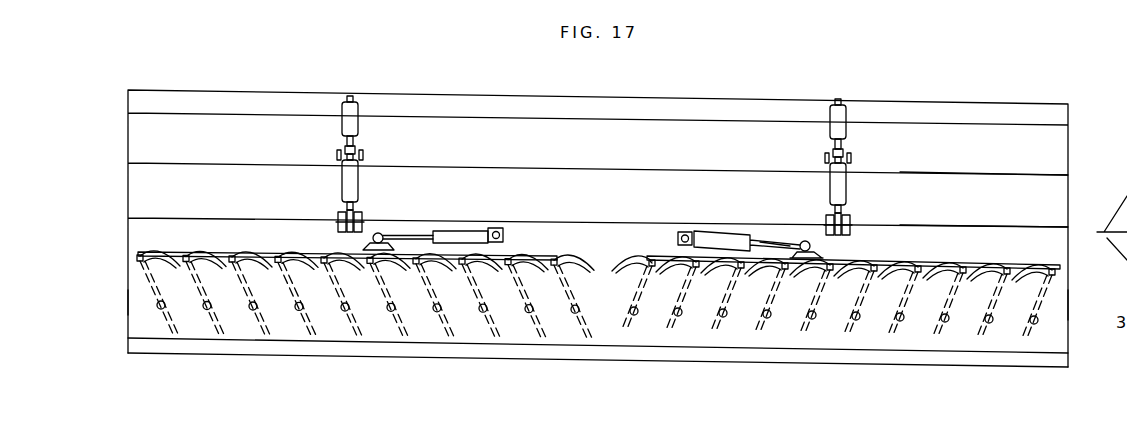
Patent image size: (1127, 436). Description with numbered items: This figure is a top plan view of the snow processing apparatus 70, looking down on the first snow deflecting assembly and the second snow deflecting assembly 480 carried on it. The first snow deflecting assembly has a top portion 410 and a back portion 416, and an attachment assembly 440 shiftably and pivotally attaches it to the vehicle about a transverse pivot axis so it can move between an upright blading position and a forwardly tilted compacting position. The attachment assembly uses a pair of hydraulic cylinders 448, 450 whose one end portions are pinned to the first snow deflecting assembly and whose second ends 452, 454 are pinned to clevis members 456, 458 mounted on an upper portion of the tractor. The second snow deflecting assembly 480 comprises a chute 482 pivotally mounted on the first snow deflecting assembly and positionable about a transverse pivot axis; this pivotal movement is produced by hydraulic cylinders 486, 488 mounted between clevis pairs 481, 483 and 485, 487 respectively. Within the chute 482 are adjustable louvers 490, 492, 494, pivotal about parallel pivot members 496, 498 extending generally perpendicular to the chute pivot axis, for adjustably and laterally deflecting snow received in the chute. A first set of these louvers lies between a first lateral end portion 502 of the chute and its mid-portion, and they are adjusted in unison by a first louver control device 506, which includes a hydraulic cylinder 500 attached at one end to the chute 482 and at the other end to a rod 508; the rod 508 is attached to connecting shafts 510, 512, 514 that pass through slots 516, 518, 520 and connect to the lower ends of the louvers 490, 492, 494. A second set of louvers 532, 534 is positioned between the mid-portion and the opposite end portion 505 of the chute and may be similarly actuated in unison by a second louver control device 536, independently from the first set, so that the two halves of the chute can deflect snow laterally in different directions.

The snow processing apparatus 70 is at (658, 92).
The top portion 410 is at (1040, 202).
The back portion 416 is at (1030, 172).
The attachment assembly 440 is at (646, 138).
The hydraulic cylinder 448 is at (848, 125).
The hydraulic cylinder 450 is at (360, 122).
The second end of cylinder 452 is at (832, 120).
The second end of cylinder 454 is at (344, 118).
The clevis member 456 is at (838, 99).
The clevis member 458 is at (351, 96).
The second snow deflecting assembly 480 is at (613, 247).
The clevis pair 481 is at (828, 222).
The chute 482 is at (606, 352).
The clevis pair 483 is at (850, 160).
The clevis pair 485 is at (338, 222).
The hydraulic cylinder 486 is at (848, 186).
The clevis pair 487 is at (340, 152).
The hydraulic cylinder 488 is at (360, 180).
The adjustable louver 490 is at (1038, 330).
The adjustable louver 492 is at (978, 330).
The adjustable louver 494 is at (940, 333).
The pivot member 496 is at (1030, 345).
The pivot member 498 is at (992, 338).
The hydraulic cylinder 500 is at (688, 228).
The first lateral end portion 502 is at (1068, 305).
The end portion 505 is at (128, 303).
The first louver control device 506 is at (768, 232).
The rod 508 is at (856, 238).
The connecting shaft 510 is at (1062, 270).
The connecting shaft 512 is at (1009, 268).
The connecting shaft 514 is at (960, 262).
The slot 516 is at (1022, 273).
The slot 518 is at (1012, 272).
The slot 520 is at (930, 268).
The louver of second set 532 is at (570, 345).
The louver of second set 534 is at (522, 345).
The second louver control device 536 is at (462, 230).